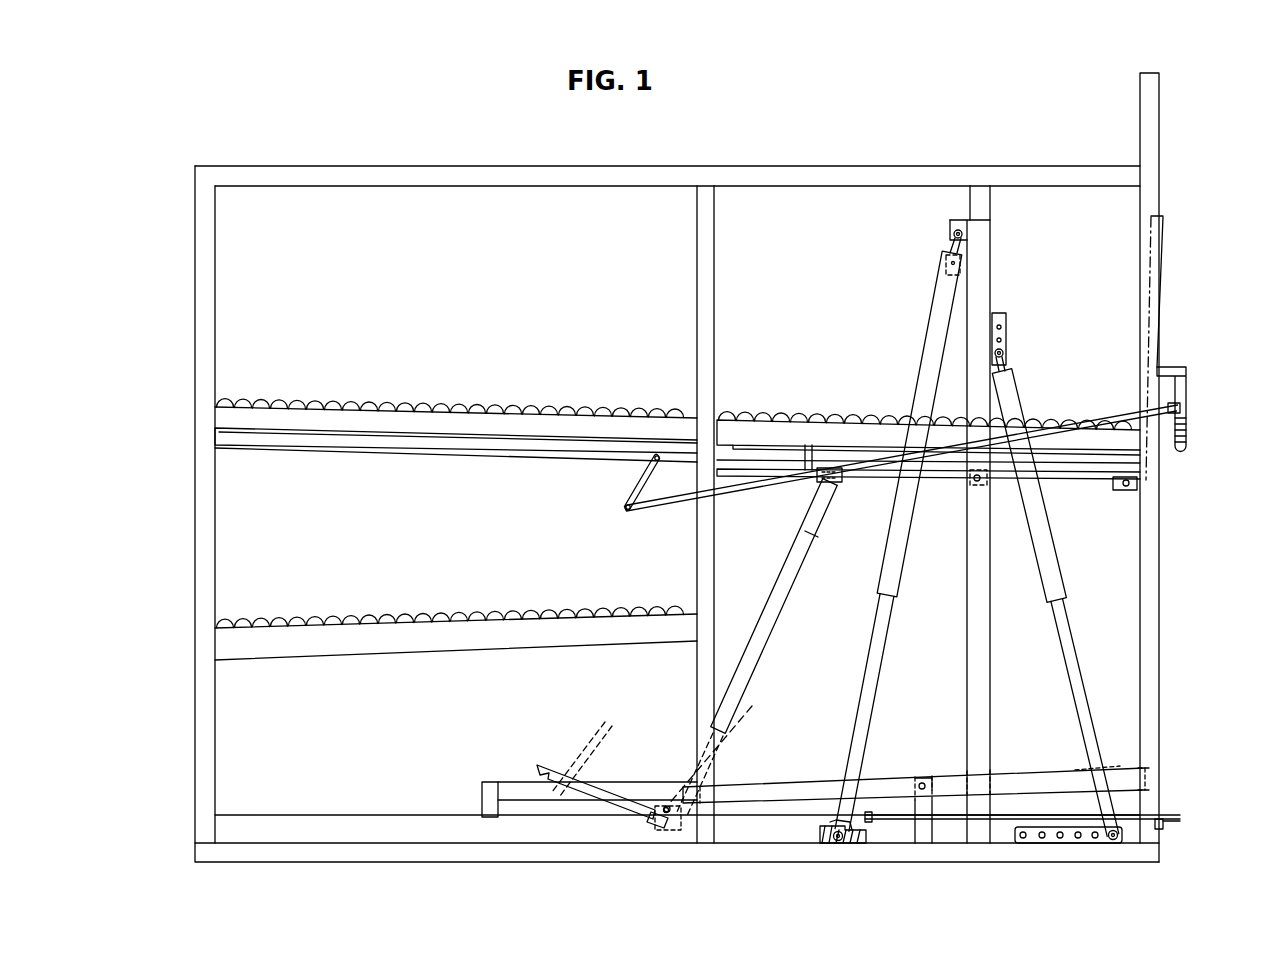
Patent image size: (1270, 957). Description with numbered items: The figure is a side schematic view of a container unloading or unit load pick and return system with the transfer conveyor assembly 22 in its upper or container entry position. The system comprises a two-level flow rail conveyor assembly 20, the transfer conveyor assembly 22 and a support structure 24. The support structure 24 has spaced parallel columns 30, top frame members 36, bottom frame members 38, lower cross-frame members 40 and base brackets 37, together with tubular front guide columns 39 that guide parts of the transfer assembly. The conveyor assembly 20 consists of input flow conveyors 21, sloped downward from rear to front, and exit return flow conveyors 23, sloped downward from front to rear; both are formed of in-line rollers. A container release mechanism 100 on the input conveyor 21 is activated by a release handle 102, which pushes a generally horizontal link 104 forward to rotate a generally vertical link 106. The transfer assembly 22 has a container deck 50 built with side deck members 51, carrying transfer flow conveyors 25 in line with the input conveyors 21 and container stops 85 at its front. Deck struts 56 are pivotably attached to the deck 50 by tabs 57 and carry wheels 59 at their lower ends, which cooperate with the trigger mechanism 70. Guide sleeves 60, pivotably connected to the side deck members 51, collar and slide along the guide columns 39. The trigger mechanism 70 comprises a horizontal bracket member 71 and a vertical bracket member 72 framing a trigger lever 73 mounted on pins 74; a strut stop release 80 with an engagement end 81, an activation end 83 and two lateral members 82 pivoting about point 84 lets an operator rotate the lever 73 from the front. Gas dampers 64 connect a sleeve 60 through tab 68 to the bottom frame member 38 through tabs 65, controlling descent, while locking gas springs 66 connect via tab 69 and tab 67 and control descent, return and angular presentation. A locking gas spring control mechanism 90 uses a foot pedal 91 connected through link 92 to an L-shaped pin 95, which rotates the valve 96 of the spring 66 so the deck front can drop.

The two-level flow rail conveyor assembly 20 is at (456, 497).
The input flow conveyor 21 is at (415, 410).
The transfer conveyor assembly 22 is at (928, 421).
The exit return flow conveyor 23 is at (400, 636).
The support structure 24 is at (684, 496).
The transfer flow conveyor 25 is at (765, 428).
The column 30 is at (205, 335).
The top frame member 36 is at (385, 172).
The base bracket 37 is at (270, 828).
The bottom frame member 38 is at (370, 852).
The front guide column 39 is at (985, 205).
The lower cross-frame member 40 is at (925, 830).
The container deck 50 is at (808, 455).
The side deck member 51 is at (947, 466).
The deck strut 56 is at (768, 606).
The tab 57 is at (833, 487).
The wheel 59 is at (670, 838).
The guide sleeve 60 is at (980, 278).
The gas damper 64 is at (1058, 548).
The tab 65 is at (1110, 841).
The locking gas spring 66 is at (880, 655).
The tab 67 is at (835, 843).
The tab 68 is at (1003, 327).
The tab 69 is at (955, 230).
The trigger mechanism 70 is at (554, 804).
The horizontal bracket member 71 is at (515, 785).
The vertical bracket member 72 is at (485, 797).
The trigger lever 73 is at (580, 792).
The pin 74 is at (600, 760).
The strut stop release 80 is at (796, 780).
The engagement end 81 is at (727, 748).
The lateral member 82 is at (1035, 775).
The activation end 83 is at (1160, 775).
The pivot point 84 is at (921, 780).
The container stop 85 is at (1163, 225).
The locking gas spring control mechanism 90 is at (896, 824).
The foot pedal 91 is at (1166, 823).
The link 92 is at (1035, 840).
The L-shaped pin 95 is at (862, 832).
The valve 96 is at (822, 833).
The container release mechanism 100 is at (655, 403).
The release handle 102 is at (1185, 432).
The horizontal link 104 is at (735, 500).
The vertical link 106 is at (645, 490).